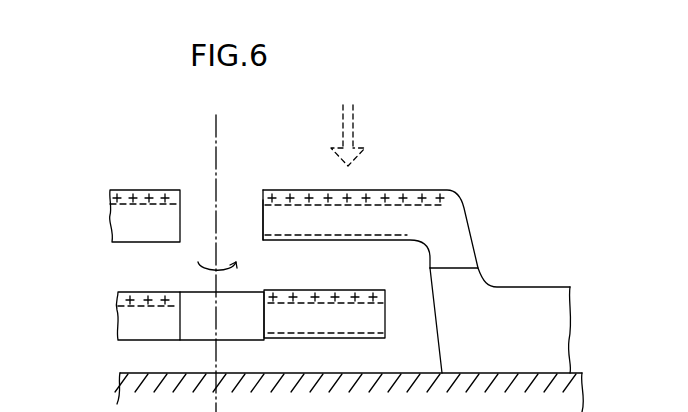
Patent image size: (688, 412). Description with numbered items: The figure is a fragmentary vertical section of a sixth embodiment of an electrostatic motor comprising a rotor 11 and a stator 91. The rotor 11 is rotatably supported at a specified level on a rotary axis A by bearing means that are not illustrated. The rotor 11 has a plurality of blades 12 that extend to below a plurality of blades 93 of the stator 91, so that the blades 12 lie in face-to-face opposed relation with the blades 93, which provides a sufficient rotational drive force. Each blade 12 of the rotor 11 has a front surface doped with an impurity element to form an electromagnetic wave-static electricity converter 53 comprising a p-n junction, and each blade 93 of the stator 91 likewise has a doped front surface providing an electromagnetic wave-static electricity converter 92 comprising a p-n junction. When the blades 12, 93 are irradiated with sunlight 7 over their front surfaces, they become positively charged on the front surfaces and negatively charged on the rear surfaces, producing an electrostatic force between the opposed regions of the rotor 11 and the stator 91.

The rotary axis A is at (216, 147).
The sunlight 7 is at (355, 138).
The rotor 11 is at (118, 292).
The blades 12 is at (365, 290).
The electromagnetic wave-static electricity converter 53 is at (386, 302).
The stator 91 is at (477, 240).
The electromagnetic wave-static electricity converter 92 is at (261, 207).
The blades 93 is at (302, 189).